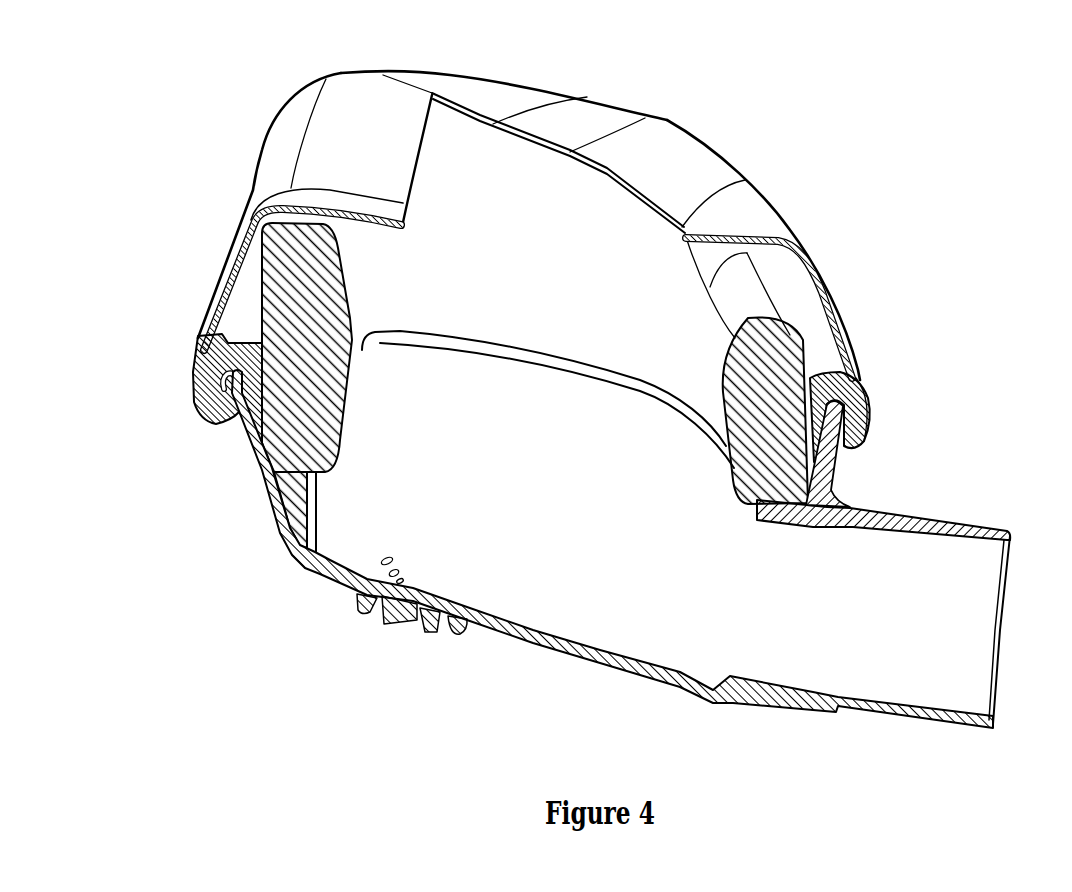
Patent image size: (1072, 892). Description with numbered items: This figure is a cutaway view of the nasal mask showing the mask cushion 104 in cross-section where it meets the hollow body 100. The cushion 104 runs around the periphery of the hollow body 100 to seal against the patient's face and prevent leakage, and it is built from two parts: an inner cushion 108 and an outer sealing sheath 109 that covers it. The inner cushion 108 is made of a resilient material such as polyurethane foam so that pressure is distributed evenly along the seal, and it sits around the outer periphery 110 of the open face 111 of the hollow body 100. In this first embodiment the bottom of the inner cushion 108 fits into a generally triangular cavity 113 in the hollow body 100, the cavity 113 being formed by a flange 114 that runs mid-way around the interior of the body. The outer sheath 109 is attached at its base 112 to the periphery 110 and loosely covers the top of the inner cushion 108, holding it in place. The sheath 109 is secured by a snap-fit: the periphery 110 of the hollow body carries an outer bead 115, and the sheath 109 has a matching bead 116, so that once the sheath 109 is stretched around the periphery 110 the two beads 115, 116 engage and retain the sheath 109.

The hollow body 100 is at (643, 603).
The mask cushion 104 is at (795, 175).
The inner cushion 108 is at (278, 320).
The outer sealing sheath 109 is at (232, 257).
The outer periphery 110 is at (842, 457).
The open face 111 is at (527, 253).
The base of the outer sheath 112 is at (847, 380).
The generally triangular cavity 113 is at (283, 505).
The flange 114 is at (307, 482).
The outer bead 115 is at (200, 357).
The matching bead 116 is at (873, 427).